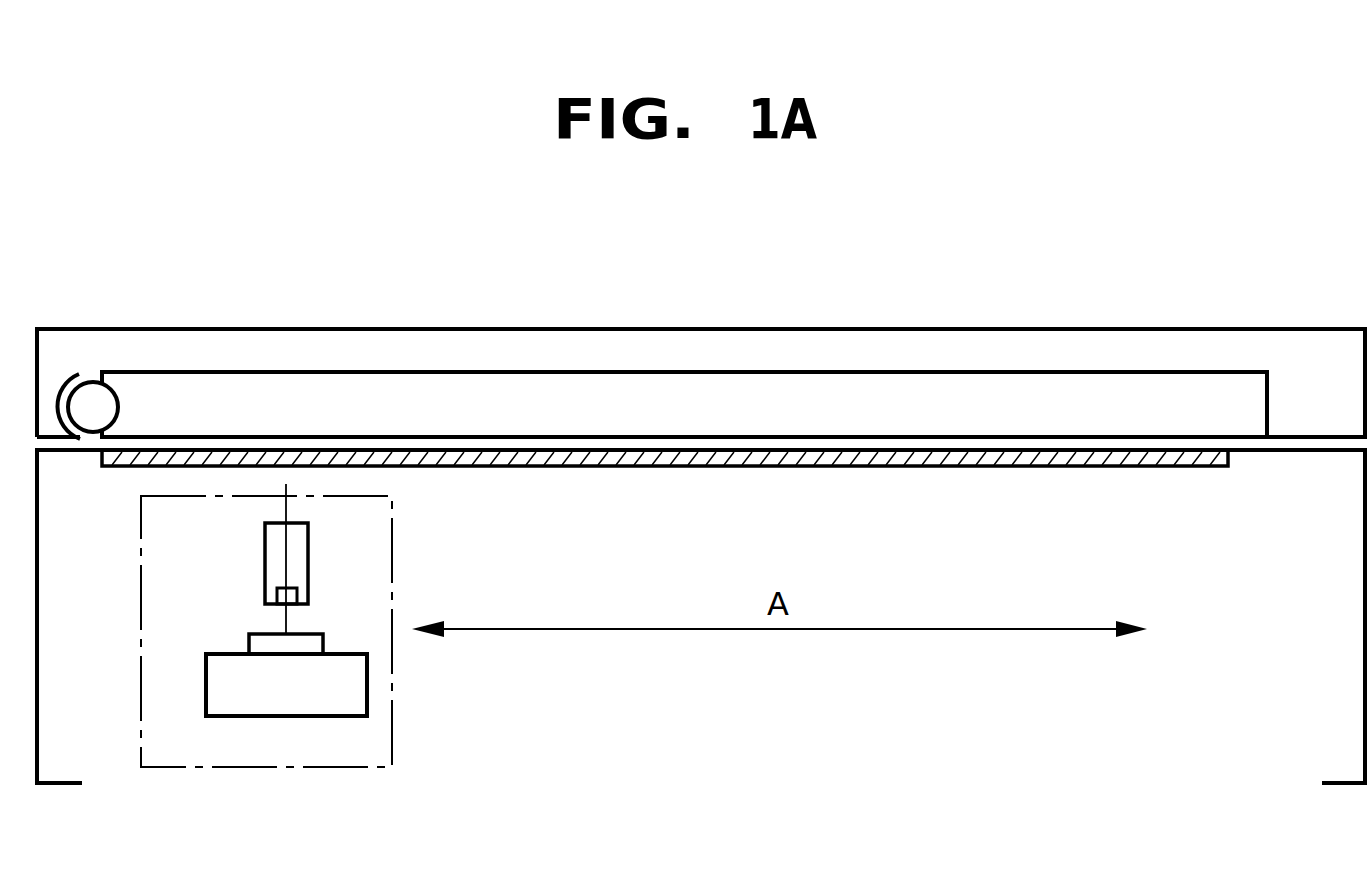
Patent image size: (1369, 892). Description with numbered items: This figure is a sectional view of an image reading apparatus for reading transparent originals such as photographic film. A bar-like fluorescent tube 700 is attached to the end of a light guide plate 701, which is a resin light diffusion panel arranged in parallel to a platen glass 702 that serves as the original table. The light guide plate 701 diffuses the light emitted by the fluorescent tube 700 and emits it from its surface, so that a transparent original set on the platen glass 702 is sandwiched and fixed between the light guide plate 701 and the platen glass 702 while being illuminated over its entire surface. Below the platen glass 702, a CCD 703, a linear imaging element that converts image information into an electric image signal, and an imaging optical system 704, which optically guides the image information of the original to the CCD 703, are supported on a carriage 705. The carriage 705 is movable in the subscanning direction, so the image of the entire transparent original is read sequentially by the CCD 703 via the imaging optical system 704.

The fluorescent tube 700 is at (87, 407).
The light guide plate 701 is at (360, 407).
The platen glass 702 is at (838, 462).
The CCD 703 is at (317, 646).
The imaging optical system 704 is at (308, 573).
The carriage 705 is at (392, 513).